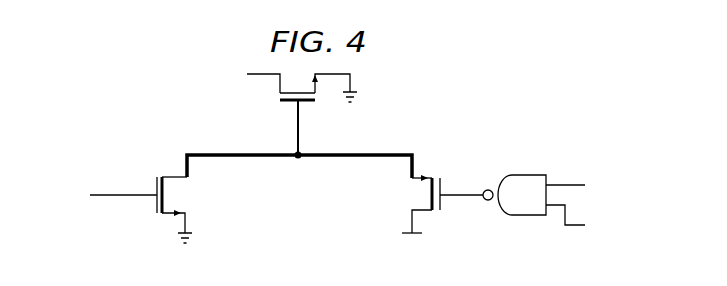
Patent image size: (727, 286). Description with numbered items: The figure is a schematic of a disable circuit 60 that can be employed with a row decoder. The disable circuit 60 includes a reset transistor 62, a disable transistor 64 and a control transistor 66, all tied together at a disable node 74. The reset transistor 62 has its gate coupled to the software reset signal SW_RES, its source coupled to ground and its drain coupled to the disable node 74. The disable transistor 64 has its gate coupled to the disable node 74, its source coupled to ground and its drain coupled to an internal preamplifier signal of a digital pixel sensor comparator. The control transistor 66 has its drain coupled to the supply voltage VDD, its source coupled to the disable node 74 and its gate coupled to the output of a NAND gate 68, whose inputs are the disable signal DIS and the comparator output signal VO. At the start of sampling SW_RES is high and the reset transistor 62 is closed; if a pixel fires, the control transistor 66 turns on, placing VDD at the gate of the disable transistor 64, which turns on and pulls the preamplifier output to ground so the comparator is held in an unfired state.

The disable circuit 60 is at (463, 119).
The reset transistor 62 is at (157, 205).
The disable transistor 64 is at (287, 103).
The control transistor 66 is at (442, 205).
The NAND gate 68 is at (527, 217).
The disable node 74 is at (383, 150).